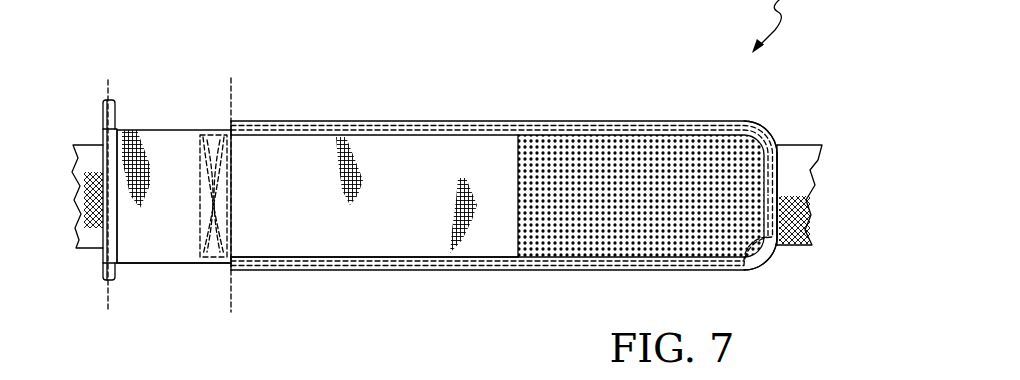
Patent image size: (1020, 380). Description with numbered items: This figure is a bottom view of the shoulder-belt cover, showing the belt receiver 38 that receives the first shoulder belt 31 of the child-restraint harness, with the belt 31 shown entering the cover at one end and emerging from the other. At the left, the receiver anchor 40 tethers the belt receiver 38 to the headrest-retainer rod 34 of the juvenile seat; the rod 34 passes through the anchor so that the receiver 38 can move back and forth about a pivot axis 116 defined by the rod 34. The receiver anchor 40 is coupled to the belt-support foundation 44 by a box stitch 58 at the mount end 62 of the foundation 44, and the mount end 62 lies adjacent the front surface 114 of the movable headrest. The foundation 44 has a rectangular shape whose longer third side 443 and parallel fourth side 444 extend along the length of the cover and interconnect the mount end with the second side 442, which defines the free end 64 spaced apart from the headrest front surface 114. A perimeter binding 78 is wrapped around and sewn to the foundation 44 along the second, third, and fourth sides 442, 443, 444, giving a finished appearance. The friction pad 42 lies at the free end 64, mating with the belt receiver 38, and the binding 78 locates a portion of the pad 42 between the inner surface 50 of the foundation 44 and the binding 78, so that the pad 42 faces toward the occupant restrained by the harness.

The first shoulder belt 31 is at (85, 237).
The headrest-retainer rod 34 is at (106, 113).
The belt receiver 38 is at (400, 277).
The receiver anchor 40 is at (143, 277).
The friction pad 42 is at (546, 197).
The belt-support foundation 44 is at (227, 208).
The inner surface 50 is at (400, 237).
The box stitch 58 is at (200, 223).
The mount end 62 is at (228, 173).
The free end 64 is at (783, 195).
The perimeter binding 78 is at (740, 121).
The front surface 114 is at (232, 300).
The pivot axis 116 is at (112, 93).
The second side 442 is at (776, 259).
The third side 443 is at (603, 119).
The fourth side 444 is at (478, 272).